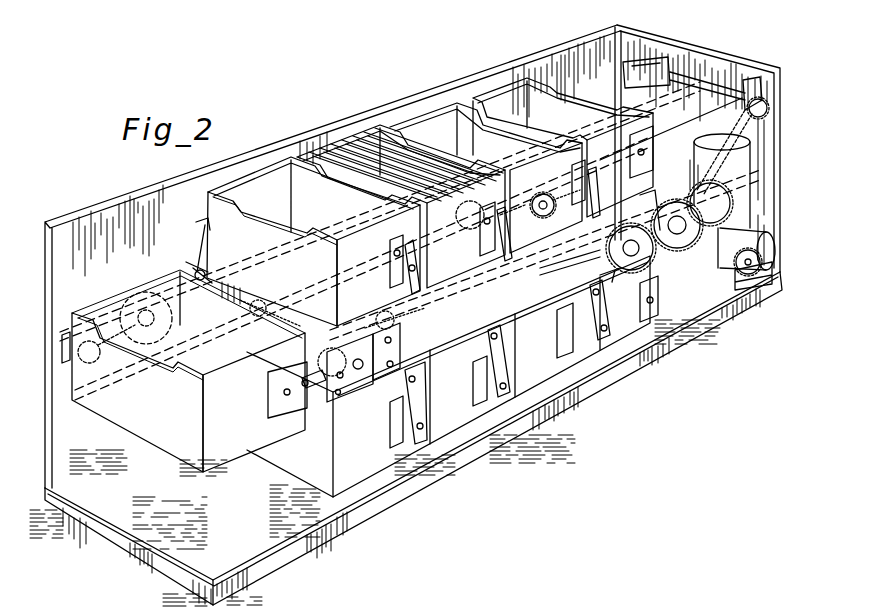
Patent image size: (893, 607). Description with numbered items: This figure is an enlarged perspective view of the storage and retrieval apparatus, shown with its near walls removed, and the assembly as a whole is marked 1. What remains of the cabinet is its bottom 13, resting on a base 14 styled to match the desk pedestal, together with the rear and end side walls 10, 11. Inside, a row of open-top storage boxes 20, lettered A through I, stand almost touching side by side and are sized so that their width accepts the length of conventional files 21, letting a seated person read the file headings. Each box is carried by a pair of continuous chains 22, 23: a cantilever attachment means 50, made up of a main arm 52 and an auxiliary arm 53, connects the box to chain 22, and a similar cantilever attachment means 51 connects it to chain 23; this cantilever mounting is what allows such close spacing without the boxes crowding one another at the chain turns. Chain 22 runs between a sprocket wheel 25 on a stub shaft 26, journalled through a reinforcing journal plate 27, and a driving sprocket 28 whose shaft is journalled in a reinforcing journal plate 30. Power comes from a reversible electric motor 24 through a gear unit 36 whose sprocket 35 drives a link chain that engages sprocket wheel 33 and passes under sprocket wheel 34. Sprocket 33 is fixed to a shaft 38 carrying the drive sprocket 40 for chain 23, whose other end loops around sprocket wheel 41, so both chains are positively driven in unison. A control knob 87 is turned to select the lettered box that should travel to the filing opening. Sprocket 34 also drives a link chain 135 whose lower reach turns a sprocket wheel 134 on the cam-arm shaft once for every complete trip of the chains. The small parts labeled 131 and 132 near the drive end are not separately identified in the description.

The apparatus 1 is at (101, 569).
The side wall 10 is at (133, 204).
The side wall 11 is at (680, 56).
The bottom 13 is at (262, 546).
The base 14 is at (170, 572).
The storage boxes 20 is at (490, 98).
The files 21 is at (354, 148).
The chain 22 is at (367, 337).
The chain 23 is at (258, 256).
The reversible electric motor 24 is at (738, 152).
The sprocket wheel 25 is at (318, 398).
The stub shaft 26 is at (358, 384).
The journal plate 27 is at (393, 356).
The driving sprocket 28 is at (652, 197).
The reinforcing journal plate 30 is at (576, 268).
The sprocket wheel 33 is at (606, 258).
The sprocket wheel 34 is at (733, 238).
The sprocket 35 is at (762, 262).
The gear unit 36 is at (702, 290).
The shaft 38 is at (519, 224).
The drive sprocket 40 is at (468, 226).
The sprocket wheel 41 is at (140, 294).
The cantilever attachment means 50 is at (389, 299).
The cantilever attachment means 51 is at (191, 224).
The main arm 52 is at (500, 390).
The auxiliary arm 53 is at (200, 272).
The control knob 87 is at (541, 199).
The bracket 131 is at (662, 299).
The lever 132 is at (614, 285).
The sprocket wheel 134 is at (768, 108).
The link chain 135 is at (742, 100).